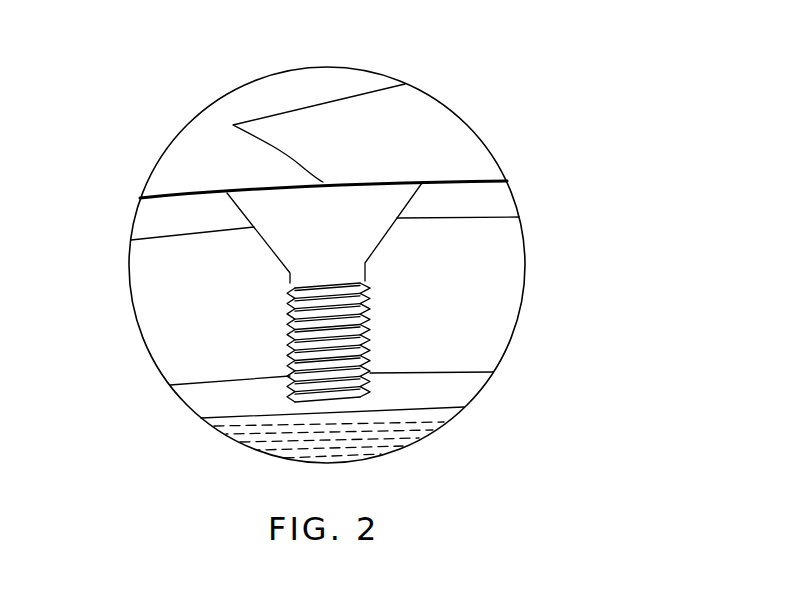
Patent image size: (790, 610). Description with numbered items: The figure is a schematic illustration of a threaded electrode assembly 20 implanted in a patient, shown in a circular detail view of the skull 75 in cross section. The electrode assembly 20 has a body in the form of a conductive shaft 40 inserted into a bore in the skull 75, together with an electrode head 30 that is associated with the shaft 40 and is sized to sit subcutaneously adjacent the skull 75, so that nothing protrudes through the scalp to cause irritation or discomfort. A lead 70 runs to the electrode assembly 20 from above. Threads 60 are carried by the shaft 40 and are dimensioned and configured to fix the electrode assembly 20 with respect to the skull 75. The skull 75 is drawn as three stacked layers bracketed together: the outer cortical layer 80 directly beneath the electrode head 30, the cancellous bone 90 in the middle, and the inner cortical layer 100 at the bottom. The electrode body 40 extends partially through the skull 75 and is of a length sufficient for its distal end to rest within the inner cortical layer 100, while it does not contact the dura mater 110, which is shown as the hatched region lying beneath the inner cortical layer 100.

The electrode assembly 20 is at (303, 271).
The electrode head 30 is at (360, 197).
The conductive shaft/electrode body 40 is at (278, 404).
The threads 60 is at (366, 320).
The lead 70 is at (329, 100).
The skull 75 is at (404, 296).
The outer cortical layer 80 is at (492, 193).
The cancellous bone 90 is at (492, 298).
The inner cortical layer 100 is at (386, 399).
The dura mater 110 is at (410, 428).